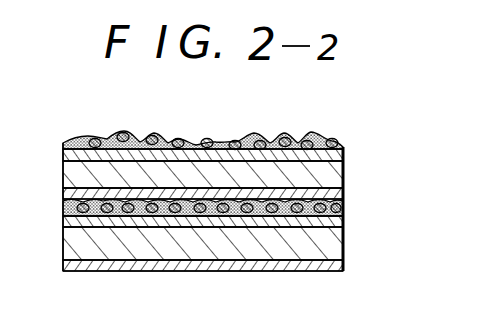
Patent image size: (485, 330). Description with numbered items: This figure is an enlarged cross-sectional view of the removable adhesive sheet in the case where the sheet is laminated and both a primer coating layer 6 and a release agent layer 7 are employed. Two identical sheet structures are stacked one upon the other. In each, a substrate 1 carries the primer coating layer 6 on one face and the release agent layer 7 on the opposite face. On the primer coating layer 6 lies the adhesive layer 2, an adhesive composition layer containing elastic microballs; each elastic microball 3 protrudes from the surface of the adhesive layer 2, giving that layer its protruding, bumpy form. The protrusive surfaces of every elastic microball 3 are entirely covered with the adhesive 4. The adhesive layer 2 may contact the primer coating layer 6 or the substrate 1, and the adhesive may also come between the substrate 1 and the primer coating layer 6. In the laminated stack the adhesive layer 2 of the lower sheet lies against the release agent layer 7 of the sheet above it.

The substrate 1 is at (345, 172).
The adhesive layer 2 is at (241, 162).
The elastic microball 3 is at (190, 143).
The adhesive 4 is at (168, 141).
The primer coating layer 6 is at (345, 158).
The release agent layer 7 is at (345, 192).